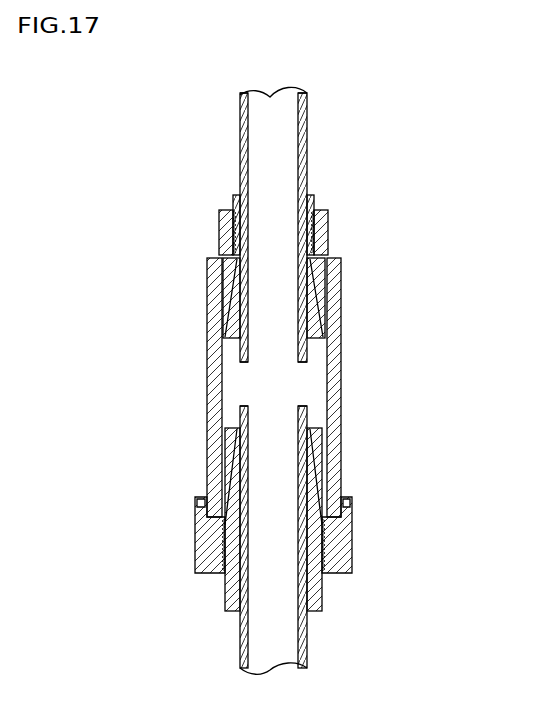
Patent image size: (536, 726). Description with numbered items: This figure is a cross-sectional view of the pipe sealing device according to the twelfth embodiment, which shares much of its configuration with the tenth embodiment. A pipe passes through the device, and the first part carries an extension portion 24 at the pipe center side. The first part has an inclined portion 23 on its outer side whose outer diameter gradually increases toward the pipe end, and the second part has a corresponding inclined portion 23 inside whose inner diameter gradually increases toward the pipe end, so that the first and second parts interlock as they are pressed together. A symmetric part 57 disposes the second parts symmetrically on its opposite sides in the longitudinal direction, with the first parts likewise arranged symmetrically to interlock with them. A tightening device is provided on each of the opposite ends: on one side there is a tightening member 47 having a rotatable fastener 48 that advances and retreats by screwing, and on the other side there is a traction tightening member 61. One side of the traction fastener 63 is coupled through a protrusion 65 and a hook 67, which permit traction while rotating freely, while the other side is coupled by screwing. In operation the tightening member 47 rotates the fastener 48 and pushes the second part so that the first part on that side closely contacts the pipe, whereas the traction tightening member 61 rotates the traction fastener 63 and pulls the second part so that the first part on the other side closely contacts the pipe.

The extension portion 24 is at (228, 195).
The inclined portion 23 is at (334, 276).
The tightening member 47 is at (320, 210).
The rotatable fastener 48 is at (192, 215).
The symmetric part 57 is at (352, 368).
The traction tightening member 61 is at (160, 548).
The traction fastener 63 is at (353, 545).
The protrusion 65 is at (203, 510).
The hook 67 is at (348, 508).